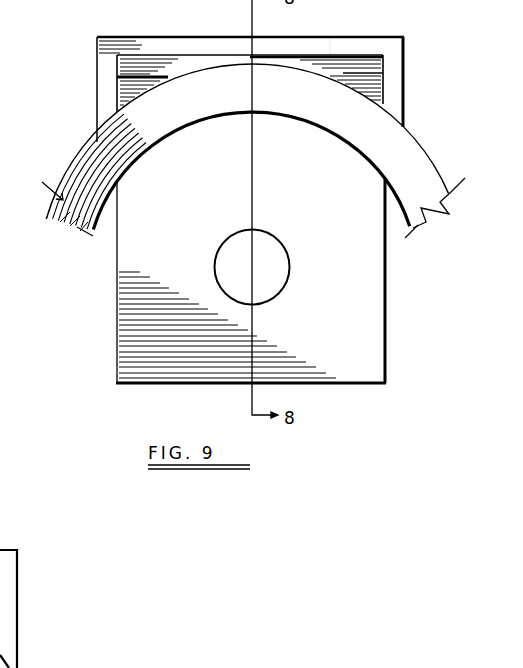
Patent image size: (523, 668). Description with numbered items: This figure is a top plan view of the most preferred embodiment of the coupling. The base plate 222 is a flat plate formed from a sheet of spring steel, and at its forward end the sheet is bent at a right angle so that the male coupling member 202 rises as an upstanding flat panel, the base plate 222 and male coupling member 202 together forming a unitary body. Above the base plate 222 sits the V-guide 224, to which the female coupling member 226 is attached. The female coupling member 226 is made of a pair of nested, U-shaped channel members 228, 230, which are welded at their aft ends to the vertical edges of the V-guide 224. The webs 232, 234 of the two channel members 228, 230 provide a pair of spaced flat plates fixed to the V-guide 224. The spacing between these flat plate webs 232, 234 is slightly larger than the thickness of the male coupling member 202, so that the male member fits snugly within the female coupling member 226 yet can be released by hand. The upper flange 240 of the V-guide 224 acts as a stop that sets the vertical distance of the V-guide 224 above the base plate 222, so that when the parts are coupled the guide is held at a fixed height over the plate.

The male coupling member 202 is at (177, 67).
The base plate 222 is at (127, 240).
The V-guide 224 is at (482, 151).
The female coupling member 226 is at (372, 31).
The U-shaped channel member 228 is at (106, 86).
The U-shaped channel member 230 is at (100, 120).
The web 232 is at (311, 31).
The web 234 is at (383, 73).
The upper flange 240 is at (466, 121).